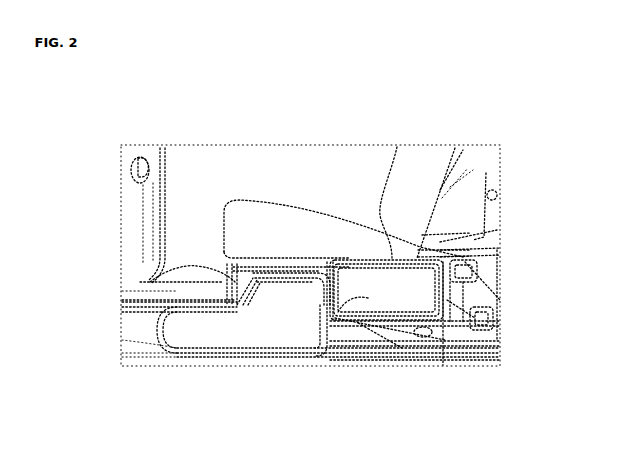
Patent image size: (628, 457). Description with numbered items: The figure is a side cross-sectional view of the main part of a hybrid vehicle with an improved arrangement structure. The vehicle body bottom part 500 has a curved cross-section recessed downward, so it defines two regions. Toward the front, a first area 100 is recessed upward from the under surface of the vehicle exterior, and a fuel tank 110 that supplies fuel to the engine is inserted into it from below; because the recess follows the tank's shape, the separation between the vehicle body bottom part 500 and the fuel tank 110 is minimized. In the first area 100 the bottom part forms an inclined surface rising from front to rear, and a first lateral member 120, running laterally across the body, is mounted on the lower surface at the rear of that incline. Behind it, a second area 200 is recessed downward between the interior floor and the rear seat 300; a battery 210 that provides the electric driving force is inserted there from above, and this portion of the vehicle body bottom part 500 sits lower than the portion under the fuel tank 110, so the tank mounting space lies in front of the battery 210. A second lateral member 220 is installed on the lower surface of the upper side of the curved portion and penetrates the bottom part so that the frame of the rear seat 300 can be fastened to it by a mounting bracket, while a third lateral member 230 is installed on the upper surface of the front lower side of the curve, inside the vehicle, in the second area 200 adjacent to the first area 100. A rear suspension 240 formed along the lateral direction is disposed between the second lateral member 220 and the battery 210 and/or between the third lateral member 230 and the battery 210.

The first area 100 is at (243, 360).
The fuel tank 110 is at (192, 340).
The first lateral member 120 is at (140, 282).
The second area 200 is at (367, 258).
The battery 210 is at (410, 280).
The second lateral member 220 is at (470, 265).
The third lateral member 230 is at (323, 362).
The rear suspension 240 is at (365, 288).
The rear seat 300 is at (276, 212).
The vehicle body bottom part 500 is at (122, 302).